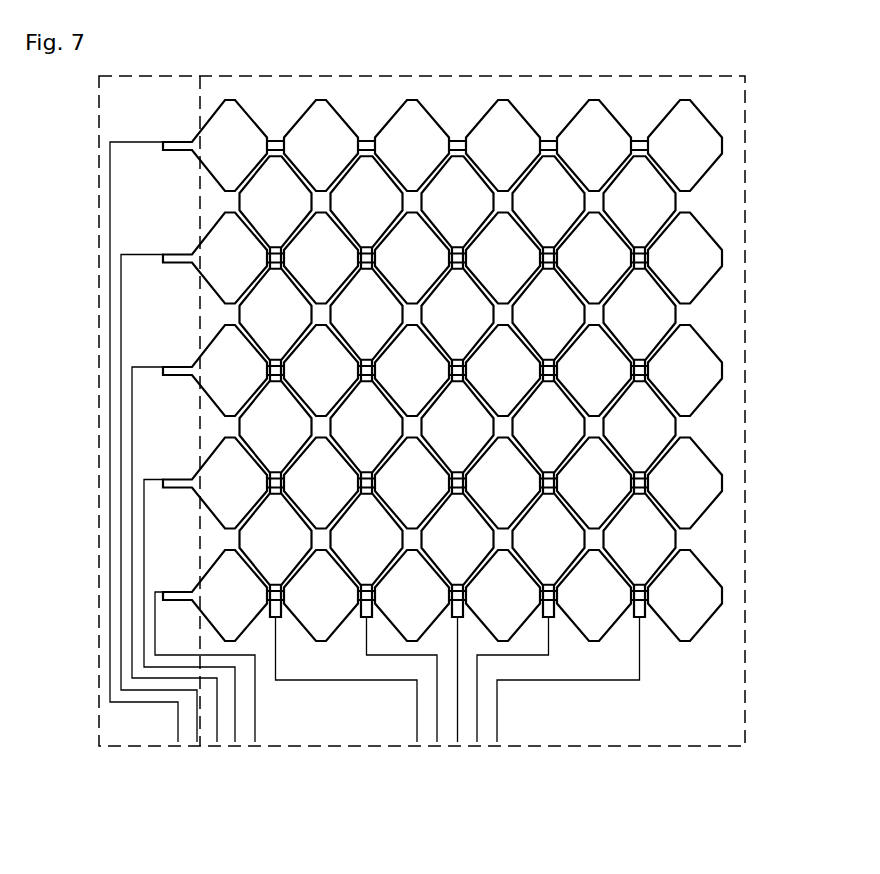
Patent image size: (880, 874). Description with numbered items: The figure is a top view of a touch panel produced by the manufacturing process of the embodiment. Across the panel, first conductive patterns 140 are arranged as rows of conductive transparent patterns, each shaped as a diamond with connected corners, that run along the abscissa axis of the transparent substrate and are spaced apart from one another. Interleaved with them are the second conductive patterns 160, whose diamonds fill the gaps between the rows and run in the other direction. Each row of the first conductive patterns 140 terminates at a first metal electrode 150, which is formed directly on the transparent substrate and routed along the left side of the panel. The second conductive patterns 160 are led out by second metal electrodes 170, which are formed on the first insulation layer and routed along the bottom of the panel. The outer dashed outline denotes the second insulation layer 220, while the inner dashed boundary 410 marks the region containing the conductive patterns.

The first conductive pattern 140 is at (708, 597).
The second conductive pattern 160 is at (657, 541).
The first metal electrode 150 is at (255, 718).
The second metal electrode 170 is at (563, 680).
The second insulation layer 220 is at (99, 124).
The active touch area boundary 410 is at (200, 204).